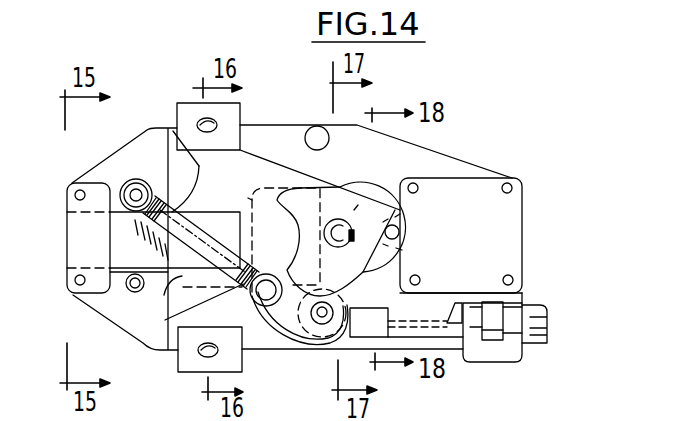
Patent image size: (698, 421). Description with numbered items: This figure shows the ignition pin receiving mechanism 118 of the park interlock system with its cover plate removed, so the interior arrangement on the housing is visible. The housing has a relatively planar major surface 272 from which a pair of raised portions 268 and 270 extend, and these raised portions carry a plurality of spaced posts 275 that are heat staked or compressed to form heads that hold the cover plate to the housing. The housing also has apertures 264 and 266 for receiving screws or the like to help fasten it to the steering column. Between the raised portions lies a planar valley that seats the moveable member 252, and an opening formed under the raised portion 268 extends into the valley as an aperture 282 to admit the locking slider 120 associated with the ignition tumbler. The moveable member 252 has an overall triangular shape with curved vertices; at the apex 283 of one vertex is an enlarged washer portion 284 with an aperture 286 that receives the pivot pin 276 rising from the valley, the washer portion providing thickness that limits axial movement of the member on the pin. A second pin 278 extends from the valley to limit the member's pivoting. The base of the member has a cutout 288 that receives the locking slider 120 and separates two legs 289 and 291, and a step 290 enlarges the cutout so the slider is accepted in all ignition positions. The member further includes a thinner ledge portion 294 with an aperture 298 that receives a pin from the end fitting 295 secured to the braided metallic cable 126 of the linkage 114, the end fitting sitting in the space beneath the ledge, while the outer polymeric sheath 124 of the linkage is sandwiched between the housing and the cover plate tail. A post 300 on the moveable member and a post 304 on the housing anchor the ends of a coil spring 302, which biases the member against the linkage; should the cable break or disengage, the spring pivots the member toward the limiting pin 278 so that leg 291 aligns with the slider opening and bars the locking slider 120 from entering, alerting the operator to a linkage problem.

The linkage 114 is at (535, 300).
The ignition pin receiving mechanism 118 is at (507, 134).
The locking slider 120 is at (123, 250).
The outer polymeric sheath 124 is at (492, 345).
The braided metallic cable 126 is at (452, 302).
The moveable member 252 is at (333, 191).
The aperture 264 is at (218, 347).
The aperture 266 is at (215, 127).
The raised portion 268 is at (68, 217).
The raised portion 270 is at (492, 242).
The planar major surface 272 is at (392, 160).
The spaced posts 275 is at (72, 193).
The pivot pin 276 is at (397, 224).
The second pin 278 is at (327, 127).
The aperture 282 is at (256, 182).
The apex 283 is at (414, 232).
The washer portion 284 is at (358, 205).
The aperture 286 is at (399, 241).
The cutout 288 is at (248, 198).
The leg 289 is at (170, 128).
The step 290 is at (205, 182).
The leg 291 is at (200, 306).
The ledge portion 294 is at (288, 322).
The end fitting 295 is at (384, 324).
The aperture 298 is at (322, 312).
The post 300 is at (276, 320).
The coil spring 302 is at (163, 288).
The post 304 is at (116, 181).